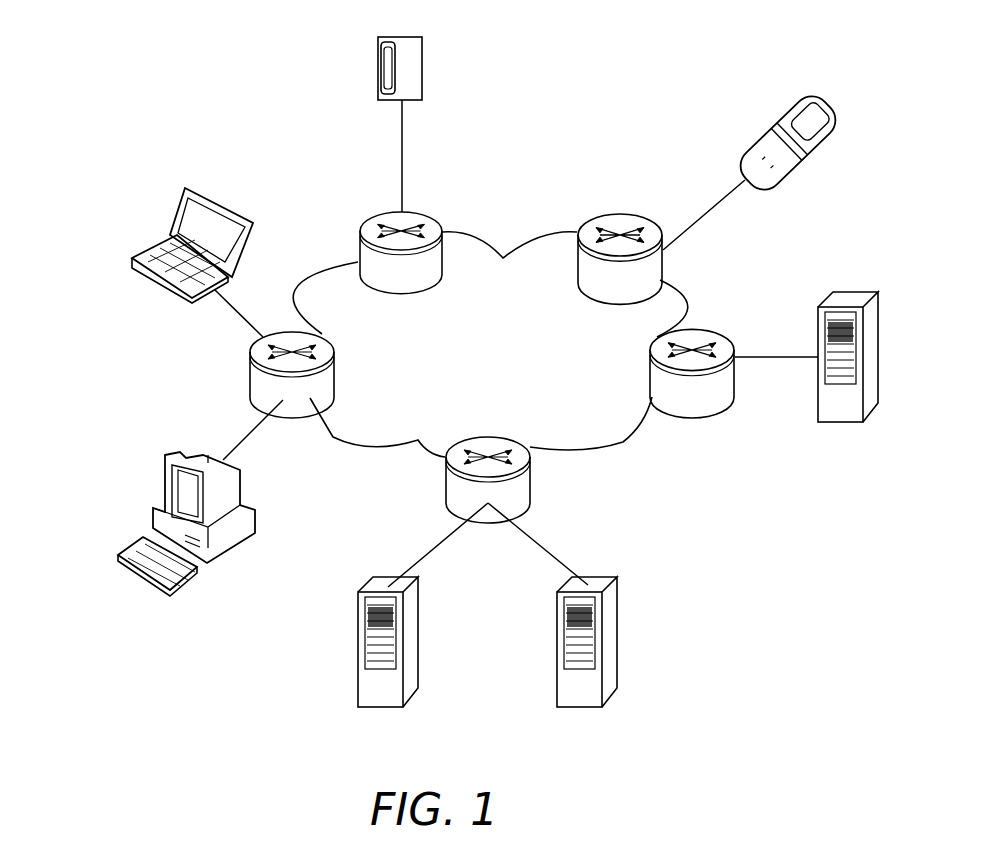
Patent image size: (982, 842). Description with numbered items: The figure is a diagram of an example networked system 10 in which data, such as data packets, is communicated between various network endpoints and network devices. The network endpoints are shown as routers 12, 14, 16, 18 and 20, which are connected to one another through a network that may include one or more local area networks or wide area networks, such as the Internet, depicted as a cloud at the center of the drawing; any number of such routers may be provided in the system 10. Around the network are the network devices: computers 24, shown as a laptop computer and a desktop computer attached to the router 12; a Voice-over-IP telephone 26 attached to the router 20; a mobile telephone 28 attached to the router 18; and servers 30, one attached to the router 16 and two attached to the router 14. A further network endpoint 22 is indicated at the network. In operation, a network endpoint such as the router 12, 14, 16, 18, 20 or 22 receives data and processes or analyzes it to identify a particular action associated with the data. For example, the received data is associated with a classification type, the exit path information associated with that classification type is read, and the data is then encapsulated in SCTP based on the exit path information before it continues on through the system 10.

The system 10 is at (233, 65).
The router 12 is at (248, 367).
The router 14 is at (447, 488).
The router 16 is at (733, 393).
The router 18 is at (580, 233).
The router 20 is at (373, 213).
The network endpoint 22 is at (630, 453).
The computers 24 is at (137, 252).
The Voice-over-IP (VoIP) telephone 26 is at (398, 35).
The mobile telephone 28 is at (773, 138).
The servers 30 is at (358, 605).